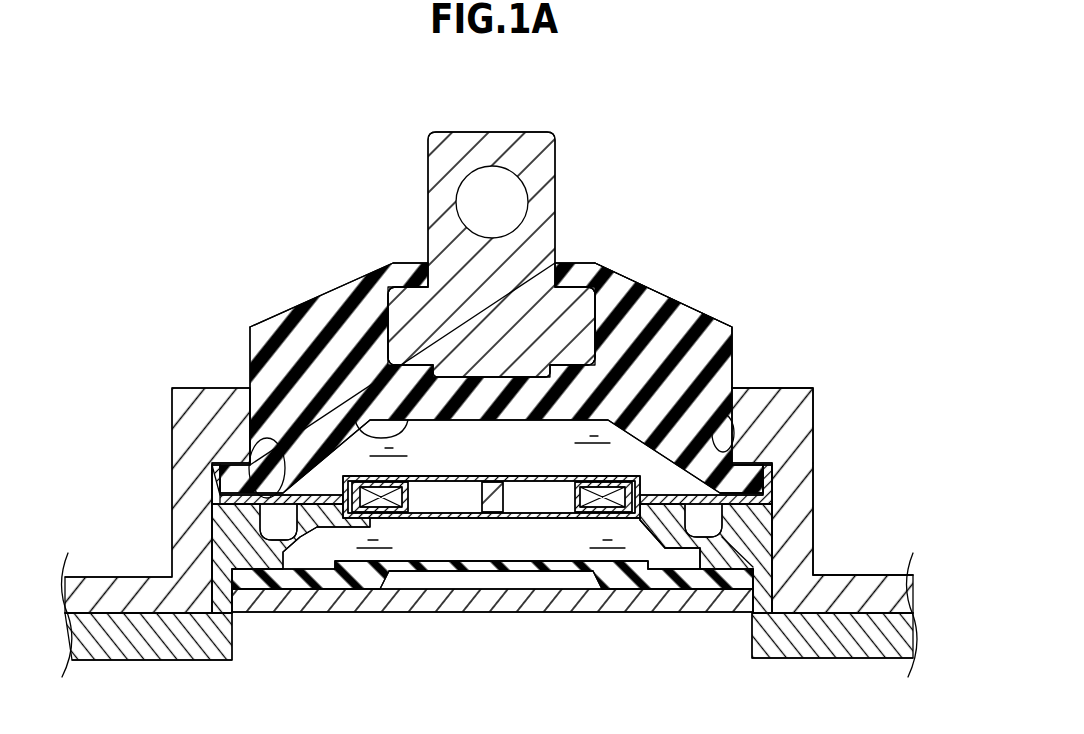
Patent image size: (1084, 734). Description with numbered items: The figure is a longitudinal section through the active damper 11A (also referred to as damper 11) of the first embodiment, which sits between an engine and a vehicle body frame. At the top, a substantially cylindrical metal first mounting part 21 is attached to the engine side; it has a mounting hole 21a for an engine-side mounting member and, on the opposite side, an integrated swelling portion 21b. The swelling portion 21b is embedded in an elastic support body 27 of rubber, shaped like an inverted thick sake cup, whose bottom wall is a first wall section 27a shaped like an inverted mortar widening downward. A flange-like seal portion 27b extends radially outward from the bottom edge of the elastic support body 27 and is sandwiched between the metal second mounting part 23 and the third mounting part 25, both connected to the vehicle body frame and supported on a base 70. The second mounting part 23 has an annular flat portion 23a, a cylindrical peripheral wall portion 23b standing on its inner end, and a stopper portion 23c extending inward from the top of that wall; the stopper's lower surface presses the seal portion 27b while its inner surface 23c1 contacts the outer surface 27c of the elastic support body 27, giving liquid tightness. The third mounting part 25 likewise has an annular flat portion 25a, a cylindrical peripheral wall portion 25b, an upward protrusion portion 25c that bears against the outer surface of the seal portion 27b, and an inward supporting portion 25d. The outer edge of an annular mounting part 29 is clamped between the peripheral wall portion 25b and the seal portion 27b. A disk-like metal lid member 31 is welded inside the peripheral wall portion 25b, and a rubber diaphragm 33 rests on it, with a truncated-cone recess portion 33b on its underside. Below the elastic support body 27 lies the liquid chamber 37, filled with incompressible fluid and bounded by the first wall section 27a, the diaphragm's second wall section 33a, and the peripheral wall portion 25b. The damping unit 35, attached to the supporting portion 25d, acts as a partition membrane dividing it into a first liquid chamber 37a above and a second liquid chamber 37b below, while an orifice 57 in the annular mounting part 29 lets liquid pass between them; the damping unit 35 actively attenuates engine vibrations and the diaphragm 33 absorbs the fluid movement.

The active damper 11A is at (762, 150).
The sensor 11 is at (762, 150).
The first mounting part 21 is at (548, 203).
The mounting hole 21a is at (460, 192).
The swelling portion 21b is at (570, 332).
The second mounting part 23 is at (818, 435).
The flat portion 23a is at (837, 620).
The peripheral wall portion 23b is at (790, 525).
The stopper portion 23c is at (750, 427).
The inner surface of stopper portion 23c1 is at (740, 438).
The third mounting part 25 is at (752, 641).
The flat portion 25a is at (863, 645).
The peripheral wall portion 25b is at (763, 553).
The protrusion portion 25c is at (768, 485).
The supporting portion 25d is at (672, 517).
The elastic support body 27 is at (690, 320).
The first wall section 27a is at (350, 480).
The seal portion 27b is at (766, 478).
The outer surface of elastic support body 27c is at (732, 367).
The annular mounting part 29 is at (628, 512).
The lid member 31 is at (345, 605).
The diaphragm 33 is at (282, 600).
The second wall section 33a is at (420, 565).
The recess portion 33b is at (572, 585).
The damping unit 35 is at (475, 523).
The liquid chamber 37 is at (457, 463).
The first liquid chamber 37a is at (558, 463).
The second liquid chamber 37b is at (558, 557).
The orifice 57 is at (250, 445).
The base 70 is at (177, 633).